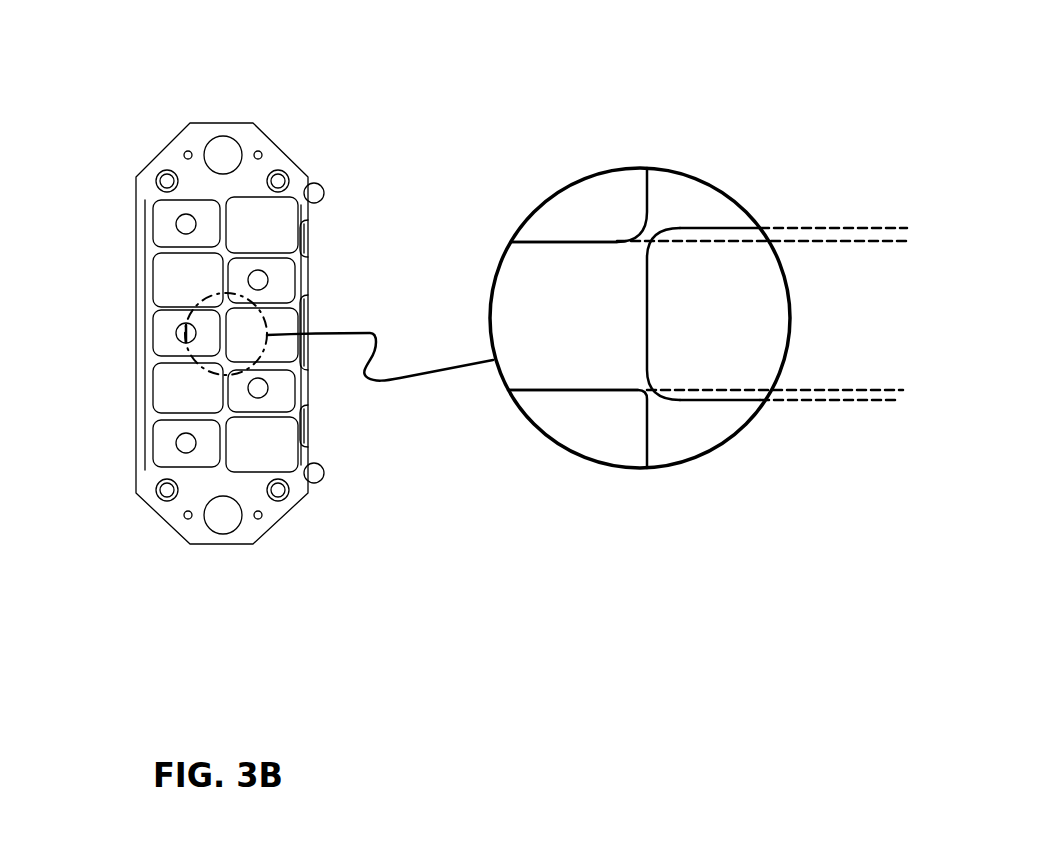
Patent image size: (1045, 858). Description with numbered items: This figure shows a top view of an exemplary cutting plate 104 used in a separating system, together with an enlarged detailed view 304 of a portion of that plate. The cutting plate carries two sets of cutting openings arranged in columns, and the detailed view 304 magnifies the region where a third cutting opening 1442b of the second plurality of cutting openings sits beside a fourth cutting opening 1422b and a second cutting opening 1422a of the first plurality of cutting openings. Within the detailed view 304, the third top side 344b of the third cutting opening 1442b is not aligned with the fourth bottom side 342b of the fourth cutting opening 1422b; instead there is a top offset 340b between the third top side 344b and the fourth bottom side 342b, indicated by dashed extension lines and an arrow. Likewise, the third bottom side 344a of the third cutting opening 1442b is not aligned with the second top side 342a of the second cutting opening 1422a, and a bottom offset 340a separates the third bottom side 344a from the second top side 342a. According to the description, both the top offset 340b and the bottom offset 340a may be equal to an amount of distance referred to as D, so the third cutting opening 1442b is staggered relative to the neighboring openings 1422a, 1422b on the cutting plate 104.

The mounting plate 104 is at (270, 138).
The second cutting opening 1422a is at (170, 383).
The fourth cutting opening 1422b is at (163, 272).
The third cutting opening 1442b is at (283, 323).
The second top side 342a is at (532, 388).
The fourth bottom side 342b is at (538, 243).
The third bottom side 344a is at (713, 400).
The third top side 344b is at (702, 228).
The bottom offset 340a is at (905, 393).
The top offset 340b is at (907, 234).
The detailed view 304 is at (630, 470).